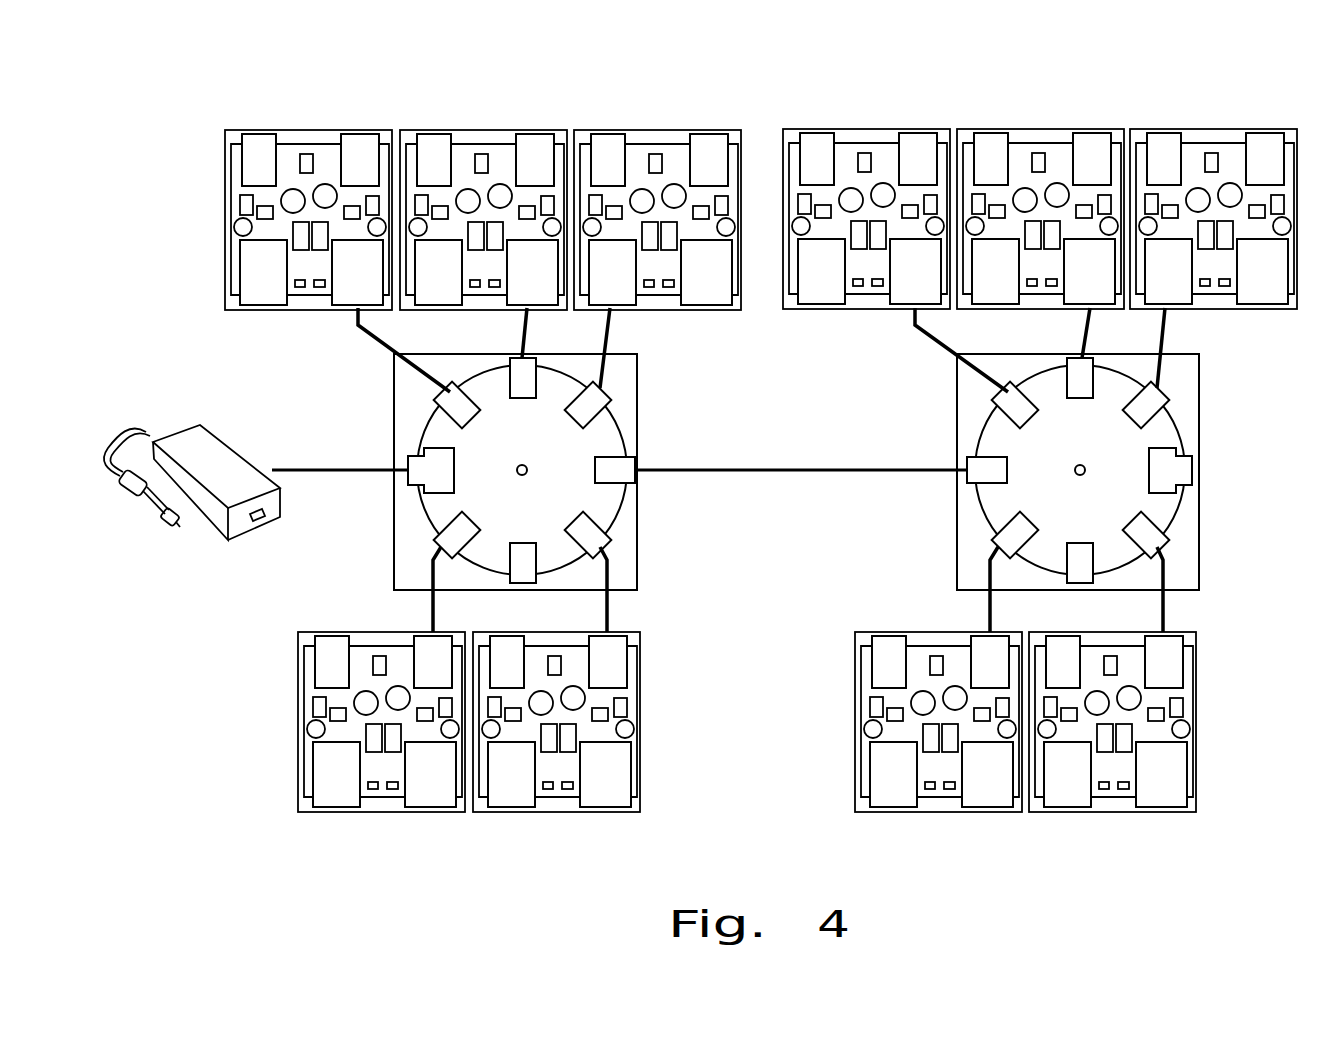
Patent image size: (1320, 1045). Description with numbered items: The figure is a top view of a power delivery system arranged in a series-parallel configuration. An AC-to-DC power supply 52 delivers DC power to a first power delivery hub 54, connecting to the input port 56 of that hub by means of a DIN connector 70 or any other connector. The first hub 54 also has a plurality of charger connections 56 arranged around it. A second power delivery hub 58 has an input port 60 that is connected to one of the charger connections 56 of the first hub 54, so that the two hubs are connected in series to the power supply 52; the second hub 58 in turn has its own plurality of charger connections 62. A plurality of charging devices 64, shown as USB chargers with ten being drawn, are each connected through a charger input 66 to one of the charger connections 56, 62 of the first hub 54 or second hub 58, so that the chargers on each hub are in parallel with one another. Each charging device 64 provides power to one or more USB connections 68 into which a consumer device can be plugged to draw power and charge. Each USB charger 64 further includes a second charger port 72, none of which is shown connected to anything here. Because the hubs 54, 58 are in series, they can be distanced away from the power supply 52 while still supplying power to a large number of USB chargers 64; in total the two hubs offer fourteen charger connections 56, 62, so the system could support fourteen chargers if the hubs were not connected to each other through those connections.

The AC-to-DC power supply 52 is at (188, 440).
The first power delivery hub 54 is at (638, 432).
The charger connections 56 is at (430, 463).
The second power delivery hub 58 is at (1195, 432).
The input port 60 is at (983, 462).
The charger connections 62 is at (1020, 412).
The charging devices 64 is at (598, 127).
The charger input 66 is at (348, 295).
The USB connections 68 is at (355, 147).
The DIN connector 70 is at (308, 469).
The second charger port 72 is at (250, 272).